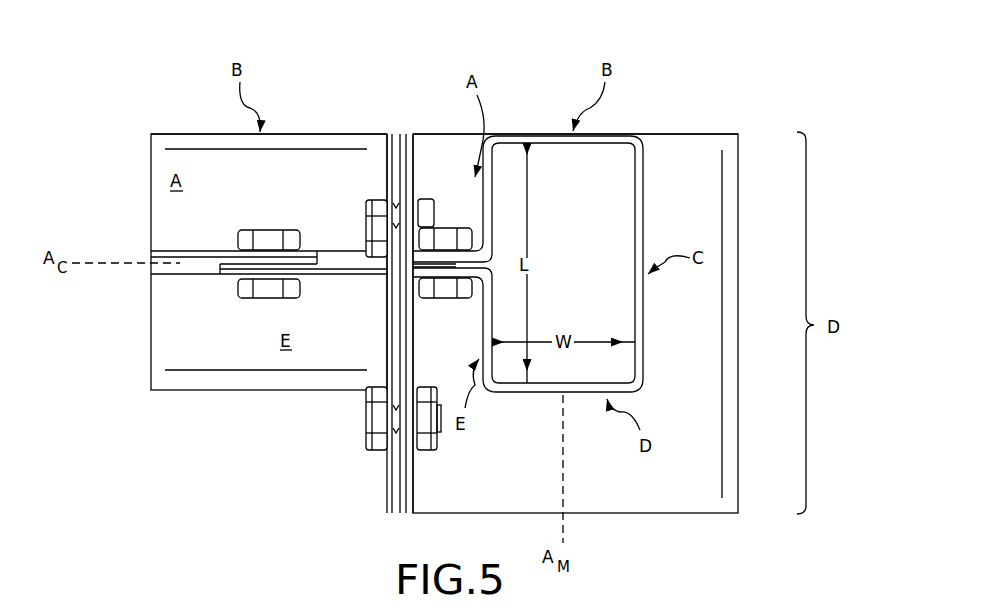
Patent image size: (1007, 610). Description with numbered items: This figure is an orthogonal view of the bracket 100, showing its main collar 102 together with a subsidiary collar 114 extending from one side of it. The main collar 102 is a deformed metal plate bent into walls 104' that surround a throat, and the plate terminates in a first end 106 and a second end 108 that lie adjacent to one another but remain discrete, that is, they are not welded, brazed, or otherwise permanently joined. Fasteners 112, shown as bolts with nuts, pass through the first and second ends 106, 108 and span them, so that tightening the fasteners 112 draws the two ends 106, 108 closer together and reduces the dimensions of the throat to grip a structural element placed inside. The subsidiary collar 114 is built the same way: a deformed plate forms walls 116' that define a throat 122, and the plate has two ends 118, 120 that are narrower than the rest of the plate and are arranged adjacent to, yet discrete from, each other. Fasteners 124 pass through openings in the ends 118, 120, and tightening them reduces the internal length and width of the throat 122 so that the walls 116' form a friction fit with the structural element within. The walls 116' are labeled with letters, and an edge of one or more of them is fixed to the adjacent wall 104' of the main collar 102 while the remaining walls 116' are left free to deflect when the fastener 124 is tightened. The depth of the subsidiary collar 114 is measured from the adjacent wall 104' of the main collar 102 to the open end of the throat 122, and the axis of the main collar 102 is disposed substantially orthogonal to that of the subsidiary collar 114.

The bracket 100 is at (709, 79).
The main collar 102 is at (727, 483).
The wall 104' is at (575, 351).
The first end 106 is at (386, 497).
The second end 108 is at (414, 495).
The fastener 112 is at (424, 199).
The subsidiary collar 114 is at (170, 382).
The subsidiary collar wall 116' is at (444, 100).
The end of subsidiary collar plate 118 is at (222, 278).
The end of subsidiary collar plate 120 is at (318, 248).
The throat 122 is at (619, 226).
The fastener 124 is at (272, 232).